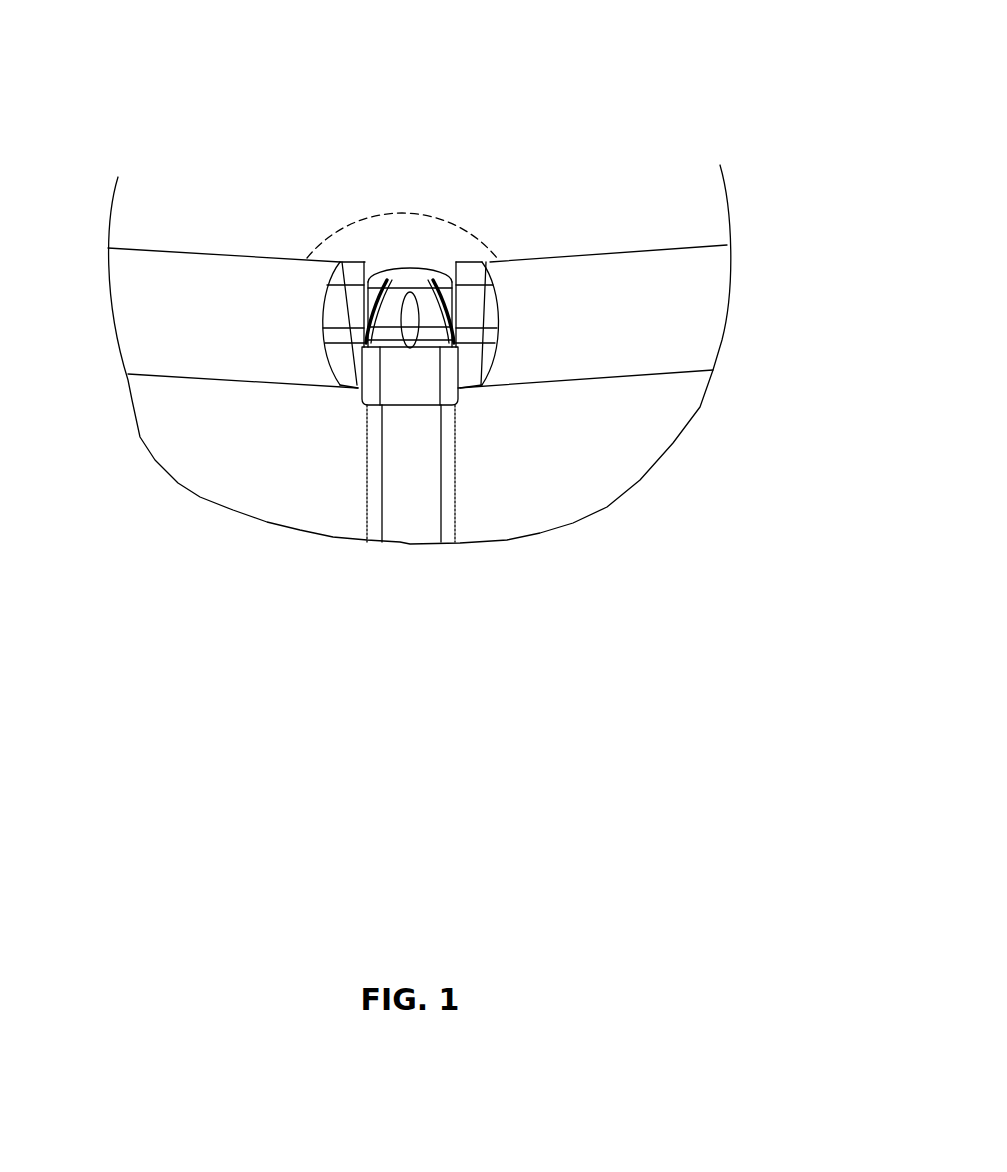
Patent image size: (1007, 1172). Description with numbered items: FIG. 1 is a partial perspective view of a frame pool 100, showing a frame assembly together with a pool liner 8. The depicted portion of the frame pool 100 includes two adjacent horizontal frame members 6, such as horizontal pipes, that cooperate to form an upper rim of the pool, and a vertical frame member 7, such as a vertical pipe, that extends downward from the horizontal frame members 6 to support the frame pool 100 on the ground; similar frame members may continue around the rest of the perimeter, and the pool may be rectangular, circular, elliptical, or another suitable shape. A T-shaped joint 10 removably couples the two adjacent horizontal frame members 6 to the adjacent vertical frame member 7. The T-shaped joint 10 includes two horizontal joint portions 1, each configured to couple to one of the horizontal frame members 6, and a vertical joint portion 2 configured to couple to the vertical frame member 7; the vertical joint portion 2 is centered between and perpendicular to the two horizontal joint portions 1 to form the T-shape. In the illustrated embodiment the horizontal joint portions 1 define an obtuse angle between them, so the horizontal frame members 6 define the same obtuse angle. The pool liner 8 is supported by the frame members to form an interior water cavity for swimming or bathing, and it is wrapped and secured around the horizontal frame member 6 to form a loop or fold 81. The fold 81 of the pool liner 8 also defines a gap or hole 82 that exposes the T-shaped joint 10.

The frame pool 100 is at (748, 121).
The pool liner 8 is at (270, 458).
The fold 81 is at (270, 305).
The hole 82 is at (340, 262).
The horizontal frame member 6 is at (480, 303).
The horizontal joint portion 1 is at (460, 300).
The T-shaped joint 10 is at (394, 248).
The vertical joint portion 2 is at (407, 372).
The vertical frame member 7 is at (420, 465).